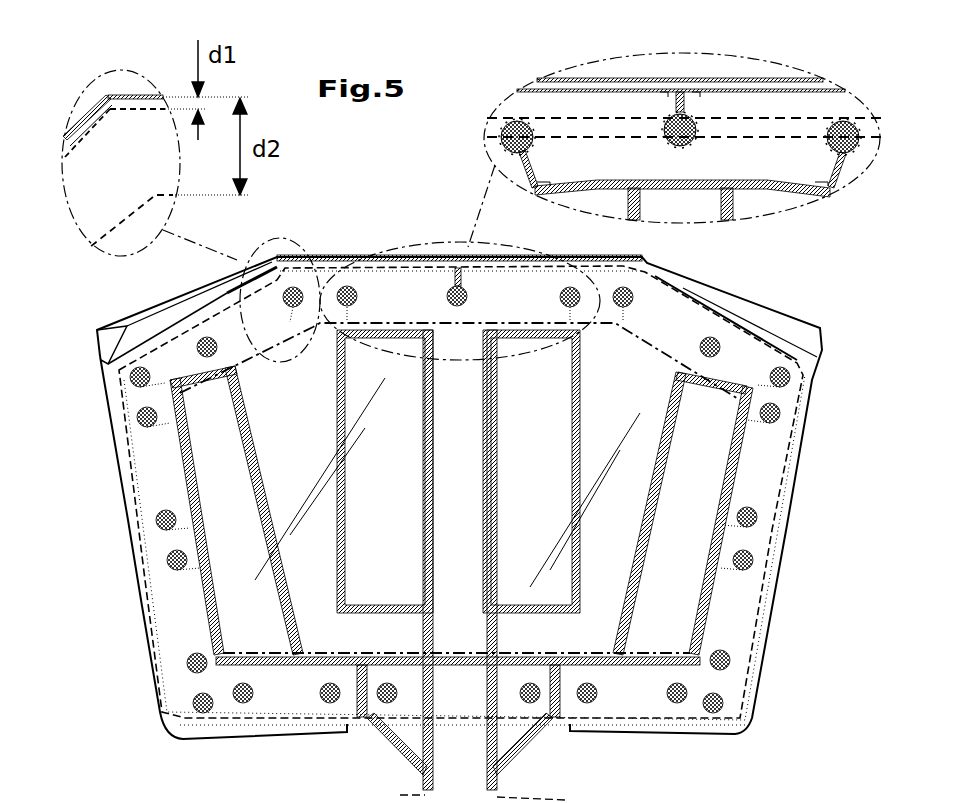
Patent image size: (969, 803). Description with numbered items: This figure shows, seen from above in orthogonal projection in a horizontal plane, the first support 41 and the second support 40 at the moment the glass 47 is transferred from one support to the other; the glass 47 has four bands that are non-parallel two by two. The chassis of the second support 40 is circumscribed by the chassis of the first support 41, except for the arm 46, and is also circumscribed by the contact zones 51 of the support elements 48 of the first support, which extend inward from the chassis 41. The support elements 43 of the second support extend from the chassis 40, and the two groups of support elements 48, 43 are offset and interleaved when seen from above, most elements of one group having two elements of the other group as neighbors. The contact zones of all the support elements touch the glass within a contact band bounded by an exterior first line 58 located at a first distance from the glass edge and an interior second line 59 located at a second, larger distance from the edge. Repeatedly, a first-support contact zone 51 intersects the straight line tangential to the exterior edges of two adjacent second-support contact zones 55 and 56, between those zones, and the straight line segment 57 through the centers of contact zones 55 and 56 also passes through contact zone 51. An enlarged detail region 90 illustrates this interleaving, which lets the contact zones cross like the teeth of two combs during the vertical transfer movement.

The second support 40 is at (408, 324).
The first support 41 is at (140, 312).
The support elements of the second support 43 is at (352, 316).
The arm 46 is at (500, 775).
The glass 47 is at (123, 97).
The support elements of the first support 48 is at (458, 276).
The contact zone 51 is at (473, 299).
The contact zone 55 is at (505, 128).
The contact zone 56 is at (845, 153).
The straight line segment 57 is at (793, 133).
The exterior first line 58 is at (670, 358).
The interior second line 59 is at (678, 340).
The detail region 90 is at (567, 117).